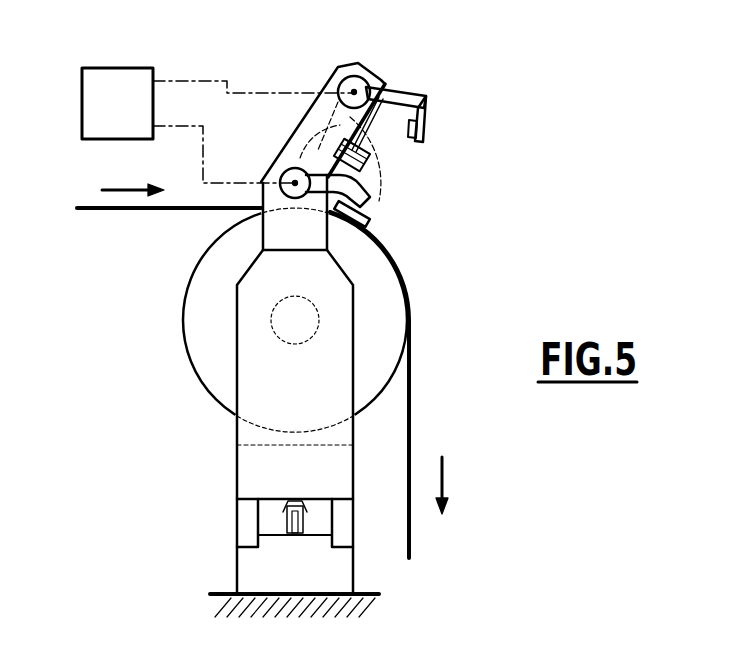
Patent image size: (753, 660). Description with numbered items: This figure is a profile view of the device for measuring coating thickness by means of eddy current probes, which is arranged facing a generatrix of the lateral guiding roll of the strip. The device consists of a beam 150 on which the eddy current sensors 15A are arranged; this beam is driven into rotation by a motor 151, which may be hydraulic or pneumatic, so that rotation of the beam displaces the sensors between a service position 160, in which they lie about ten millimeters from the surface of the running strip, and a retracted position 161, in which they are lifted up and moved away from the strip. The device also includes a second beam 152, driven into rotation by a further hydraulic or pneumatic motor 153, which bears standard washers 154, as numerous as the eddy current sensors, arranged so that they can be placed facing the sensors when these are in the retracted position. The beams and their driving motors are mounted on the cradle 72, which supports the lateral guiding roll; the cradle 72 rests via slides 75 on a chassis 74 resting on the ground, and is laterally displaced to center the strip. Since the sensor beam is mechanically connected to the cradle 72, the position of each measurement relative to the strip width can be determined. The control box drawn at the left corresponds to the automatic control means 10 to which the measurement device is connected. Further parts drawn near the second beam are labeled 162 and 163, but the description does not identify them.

The automatic control means 10 is at (411, 393).
The eddy current sensors 15A is at (367, 230).
The cradle 72 is at (248, 475).
The chassis 74 is at (345, 578).
The slides 75 is at (248, 527).
The beam 150 is at (372, 197).
The motor 151 is at (257, 207).
The second beam 152 is at (397, 94).
The motor 153 is at (350, 78).
The standard washers 154 is at (433, 121).
The service position 160 is at (373, 216).
The retracted position 161 is at (322, 133).
The bar 162 is at (428, 108).
The clamping plate 163 is at (383, 161).